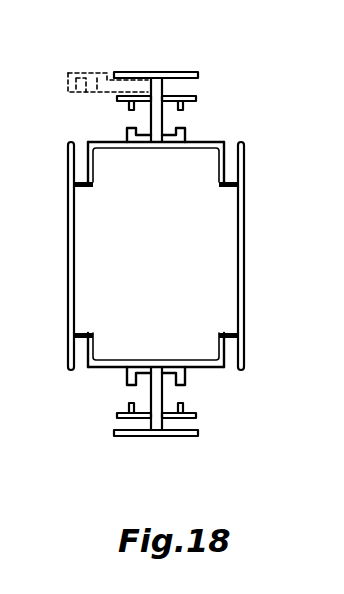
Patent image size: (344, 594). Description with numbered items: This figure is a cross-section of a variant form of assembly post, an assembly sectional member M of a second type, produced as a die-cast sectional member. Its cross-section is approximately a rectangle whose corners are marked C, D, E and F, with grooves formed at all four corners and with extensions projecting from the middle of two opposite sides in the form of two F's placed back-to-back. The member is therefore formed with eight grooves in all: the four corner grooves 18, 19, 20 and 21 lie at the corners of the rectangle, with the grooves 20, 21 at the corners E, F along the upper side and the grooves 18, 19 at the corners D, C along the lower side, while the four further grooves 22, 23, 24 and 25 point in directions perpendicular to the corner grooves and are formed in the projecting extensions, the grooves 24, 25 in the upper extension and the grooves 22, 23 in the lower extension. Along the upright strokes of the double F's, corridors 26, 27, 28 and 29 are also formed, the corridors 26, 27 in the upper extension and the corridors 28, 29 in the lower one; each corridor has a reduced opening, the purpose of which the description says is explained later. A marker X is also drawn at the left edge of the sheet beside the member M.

The structural frame member M is at (60, 257).
The corner groove 18 is at (81, 367).
The corner groove 19 is at (233, 368).
The corner groove 20 is at (85, 161).
The corner groove 21 is at (232, 172).
The groove 22 is at (125, 428).
The groove 23 is at (190, 423).
The groove 24 is at (118, 78).
The groove 25 is at (199, 82).
The corridor 26 is at (140, 113).
The corridor 27 is at (190, 120).
The corridor 28 is at (137, 390).
The corridor 29 is at (183, 393).
The corner of rectangle CDEF E is at (49, 136).
The corner of rectangle CDEF F is at (256, 134).
The corner of rectangle CDEF D is at (51, 372).
The corner of rectangle CDEF C is at (255, 367).
The axis marker X is at (4, 387).